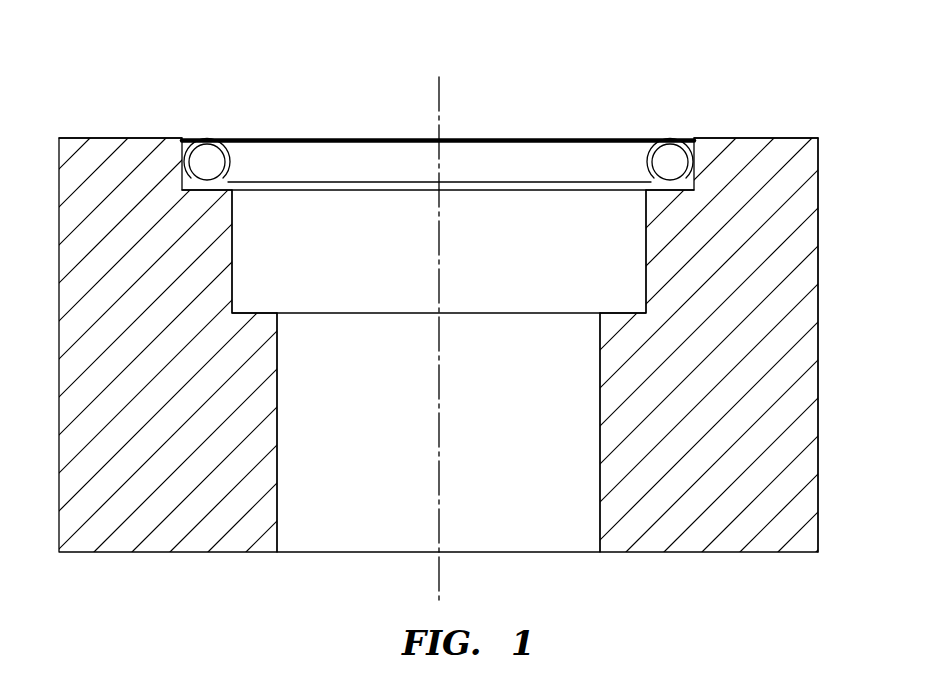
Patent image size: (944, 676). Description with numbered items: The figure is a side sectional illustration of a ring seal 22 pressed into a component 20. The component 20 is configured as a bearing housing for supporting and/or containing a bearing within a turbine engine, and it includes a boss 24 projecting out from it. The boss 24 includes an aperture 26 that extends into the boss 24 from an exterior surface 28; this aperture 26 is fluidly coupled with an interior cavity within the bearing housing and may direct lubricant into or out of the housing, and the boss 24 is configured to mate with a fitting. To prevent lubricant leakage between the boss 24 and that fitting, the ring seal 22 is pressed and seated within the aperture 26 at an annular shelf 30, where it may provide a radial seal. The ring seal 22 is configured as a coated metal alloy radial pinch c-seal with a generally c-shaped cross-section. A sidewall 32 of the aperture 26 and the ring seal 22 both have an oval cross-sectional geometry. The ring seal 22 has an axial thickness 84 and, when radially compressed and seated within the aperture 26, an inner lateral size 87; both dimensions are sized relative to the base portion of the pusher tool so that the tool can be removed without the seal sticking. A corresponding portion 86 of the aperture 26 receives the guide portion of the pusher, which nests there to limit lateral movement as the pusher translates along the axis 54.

The component 20 is at (826, 204).
The ring seal 22 is at (678, 137).
The boss 24 is at (819, 261).
The aperture 26 is at (344, 502).
The exterior surface 28 is at (767, 137).
The annular shelf 30 is at (228, 183).
The sidewall 32 is at (196, 137).
The axis 54 is at (442, 100).
The axial thickness 84 is at (342, 222).
The corresponding portion 86 is at (270, 293).
The inner lateral size 87 is at (646, 230).